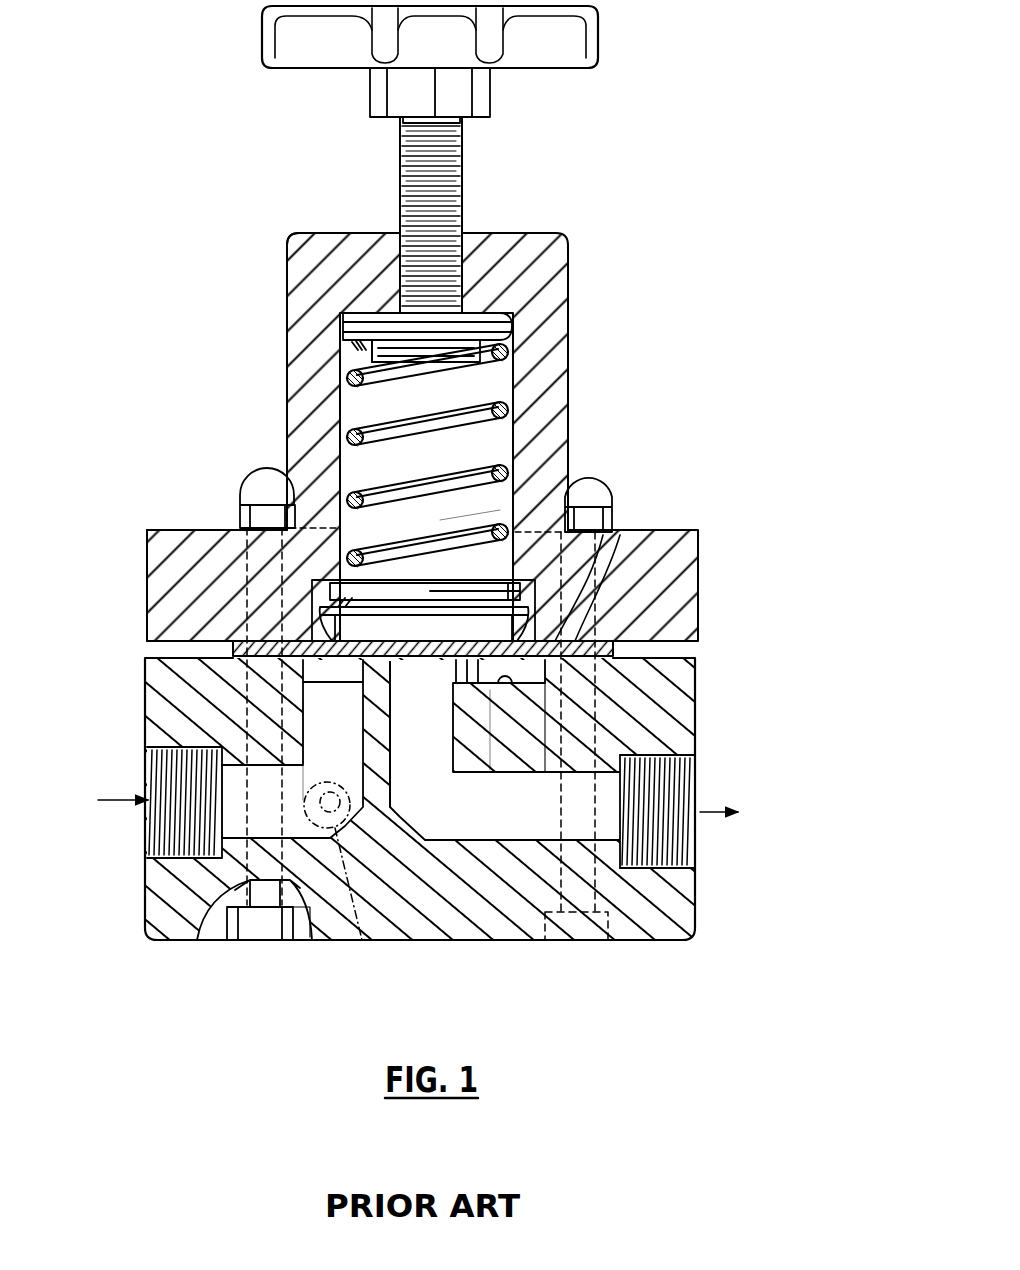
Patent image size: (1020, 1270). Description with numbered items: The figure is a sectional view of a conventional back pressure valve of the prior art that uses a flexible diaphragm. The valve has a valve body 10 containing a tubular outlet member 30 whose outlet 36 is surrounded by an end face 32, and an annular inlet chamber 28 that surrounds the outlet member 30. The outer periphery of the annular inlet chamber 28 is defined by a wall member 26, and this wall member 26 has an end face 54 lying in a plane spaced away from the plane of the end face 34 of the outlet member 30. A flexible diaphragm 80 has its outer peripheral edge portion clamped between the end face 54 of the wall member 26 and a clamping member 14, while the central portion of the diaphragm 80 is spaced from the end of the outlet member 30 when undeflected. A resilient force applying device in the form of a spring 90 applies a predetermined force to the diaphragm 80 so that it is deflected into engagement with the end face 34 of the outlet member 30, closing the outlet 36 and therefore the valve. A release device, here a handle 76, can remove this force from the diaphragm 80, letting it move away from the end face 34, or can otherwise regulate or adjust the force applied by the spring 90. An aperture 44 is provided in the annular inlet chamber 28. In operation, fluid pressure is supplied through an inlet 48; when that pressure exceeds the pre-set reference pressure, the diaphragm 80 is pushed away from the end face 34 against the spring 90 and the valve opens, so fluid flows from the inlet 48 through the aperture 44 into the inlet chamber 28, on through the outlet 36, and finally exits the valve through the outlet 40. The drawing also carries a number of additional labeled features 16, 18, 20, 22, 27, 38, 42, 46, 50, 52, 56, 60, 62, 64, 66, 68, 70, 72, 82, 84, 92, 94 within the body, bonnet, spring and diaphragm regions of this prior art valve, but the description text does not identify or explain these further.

The valve body 10 is at (140, 680).
The clamping member 14 is at (142, 546).
The diaphragm 16 is at (233, 645).
The bolts 18 is at (255, 940).
The acorn nuts 20 is at (266, 467).
The valve seat insert 22 is at (556, 690).
The wall member 26 is at (546, 740).
The seat ring 27 is at (600, 672).
The annular inlet chamber 28 is at (560, 705).
The tubular outlet member 30 is at (462, 745).
The end face 32 is at (470, 688).
The end face of the outlet member 34 is at (455, 680).
The outlet 36 is at (462, 700).
The outlet chamber 38 is at (470, 818).
The outlet 40 is at (695, 775).
The orifice 42 is at (505, 740).
The aperture 44 is at (322, 682).
The inlet chamber 46 is at (348, 761).
The inlet 48 is at (152, 770).
The ball check 50 is at (300, 805).
The bolt counterbore 52 is at (352, 940).
The end face of the wall member 54 is at (288, 749).
The passage wall 56 is at (232, 712).
The bonnet 60 is at (287, 245).
The spring housing 62 is at (548, 233).
The bonnet flange 64 is at (186, 530).
The spring lower end 66 is at (474, 535).
The spring 68 is at (440, 398).
The adjusting screw nut 70 is at (470, 240).
The adjusting screw 72 is at (463, 170).
The handle 76 is at (592, 70).
The flexible diaphragm 80 is at (606, 562).
The diaphragm plate 82 is at (235, 650).
The spring seat 84 is at (235, 641).
The spring 90 is at (338, 348).
The spring button 92 is at (378, 310).
The lower spring button 94 is at (430, 592).